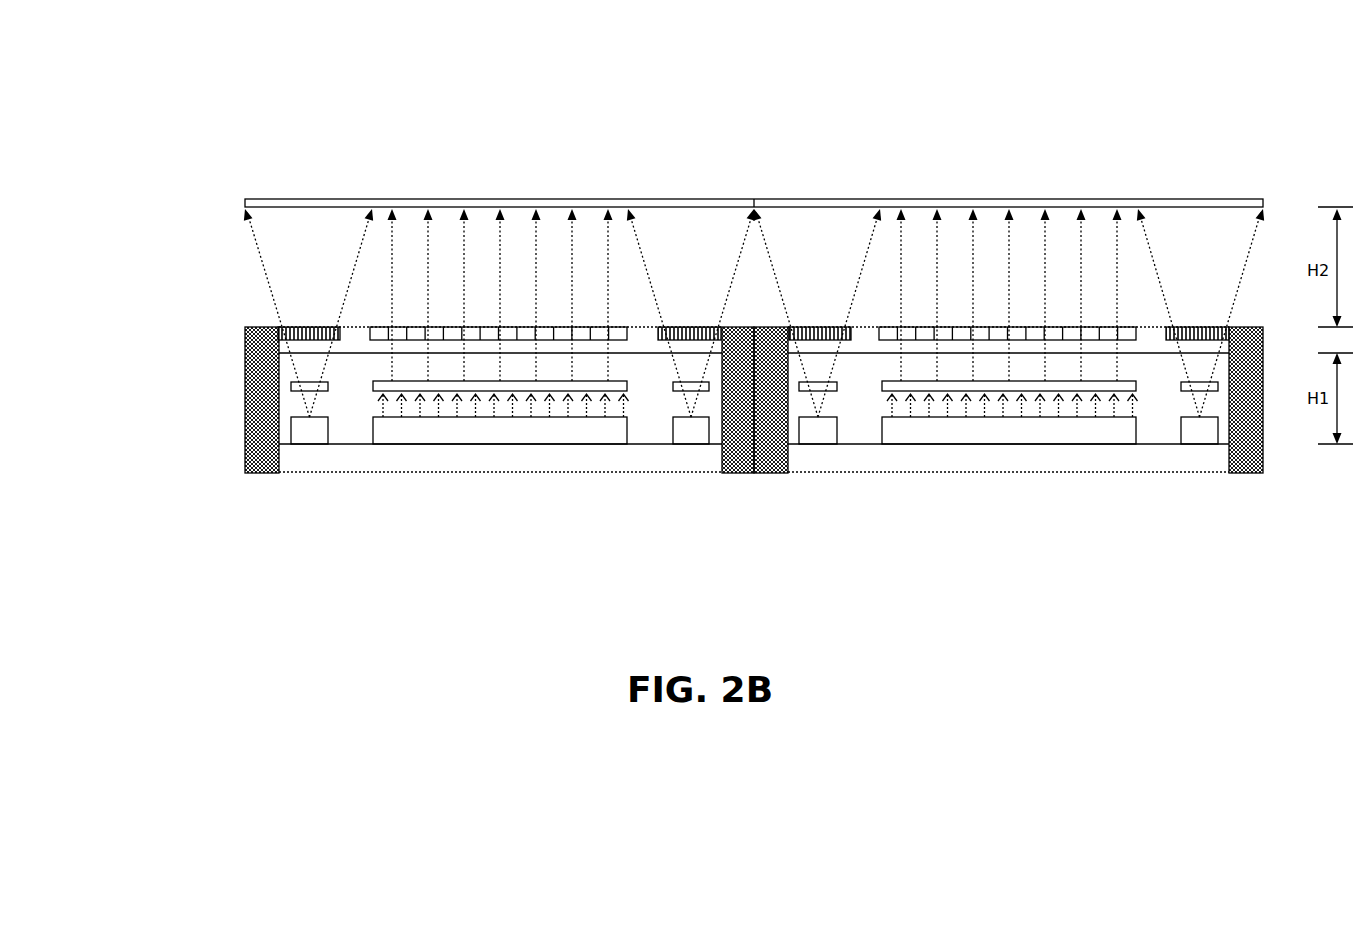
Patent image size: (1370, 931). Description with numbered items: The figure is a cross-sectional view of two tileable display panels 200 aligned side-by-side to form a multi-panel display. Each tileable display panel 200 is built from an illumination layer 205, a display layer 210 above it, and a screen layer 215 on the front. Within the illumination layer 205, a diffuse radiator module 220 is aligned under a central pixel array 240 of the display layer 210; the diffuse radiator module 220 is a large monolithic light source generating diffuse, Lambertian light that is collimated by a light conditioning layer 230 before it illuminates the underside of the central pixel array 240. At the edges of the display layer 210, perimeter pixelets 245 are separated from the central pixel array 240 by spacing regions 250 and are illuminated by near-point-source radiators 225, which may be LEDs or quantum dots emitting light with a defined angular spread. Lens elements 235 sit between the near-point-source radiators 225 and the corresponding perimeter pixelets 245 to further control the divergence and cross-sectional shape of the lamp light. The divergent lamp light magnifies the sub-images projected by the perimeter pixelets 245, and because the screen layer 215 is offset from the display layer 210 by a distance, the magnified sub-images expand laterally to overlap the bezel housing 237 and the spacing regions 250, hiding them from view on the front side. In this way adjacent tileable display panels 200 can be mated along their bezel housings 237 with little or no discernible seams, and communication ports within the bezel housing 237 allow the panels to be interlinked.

The tileable display panel 200 is at (264, 123).
The screen layer 215 is at (224, 190).
The display layer 210 is at (215, 327).
The illumination layer 205 is at (215, 362).
The bezel housing 237 is at (262, 327).
The perimeter pixelets 245 is at (326, 327).
The spacing regions 250 is at (352, 327).
The central pixel array 240 is at (454, 314).
The lens elements 235 is at (318, 388).
The near-point-source radiators 225 is at (310, 442).
The light conditioning layer 230 is at (433, 392).
The diffuse radiator module 220 is at (754, 430).